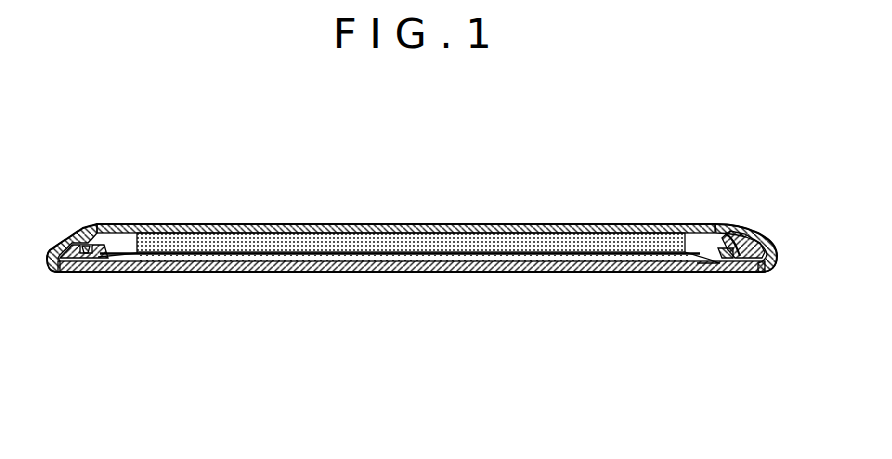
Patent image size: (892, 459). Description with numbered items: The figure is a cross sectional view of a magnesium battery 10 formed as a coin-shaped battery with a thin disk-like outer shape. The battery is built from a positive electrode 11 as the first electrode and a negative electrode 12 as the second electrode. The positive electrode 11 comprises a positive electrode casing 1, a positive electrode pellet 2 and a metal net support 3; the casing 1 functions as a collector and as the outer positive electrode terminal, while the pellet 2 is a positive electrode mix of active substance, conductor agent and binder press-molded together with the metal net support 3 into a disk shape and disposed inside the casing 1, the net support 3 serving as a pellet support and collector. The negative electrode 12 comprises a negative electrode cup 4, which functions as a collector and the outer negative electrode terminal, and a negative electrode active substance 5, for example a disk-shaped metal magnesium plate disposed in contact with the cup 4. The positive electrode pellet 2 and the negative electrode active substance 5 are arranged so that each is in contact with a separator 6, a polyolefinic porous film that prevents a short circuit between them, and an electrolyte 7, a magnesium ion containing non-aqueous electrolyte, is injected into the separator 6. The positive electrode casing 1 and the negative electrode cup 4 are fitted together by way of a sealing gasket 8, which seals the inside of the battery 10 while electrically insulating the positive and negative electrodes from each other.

The positive electrode casing 1 is at (125, 268).
The positive electrode pellet 2 is at (155, 272).
The metal net support 3 is at (180, 307).
The negative electrode cup 4 is at (137, 224).
The negative electrode active substance 5 is at (162, 236).
The separator 6 is at (697, 265).
The electrolyte 7 is at (729, 308).
The sealing gasket 8 is at (760, 240).
The magnesium battery 10 is at (453, 157).
The positive electrode 11 is at (208, 307).
The negative electrode 12 is at (188, 145).